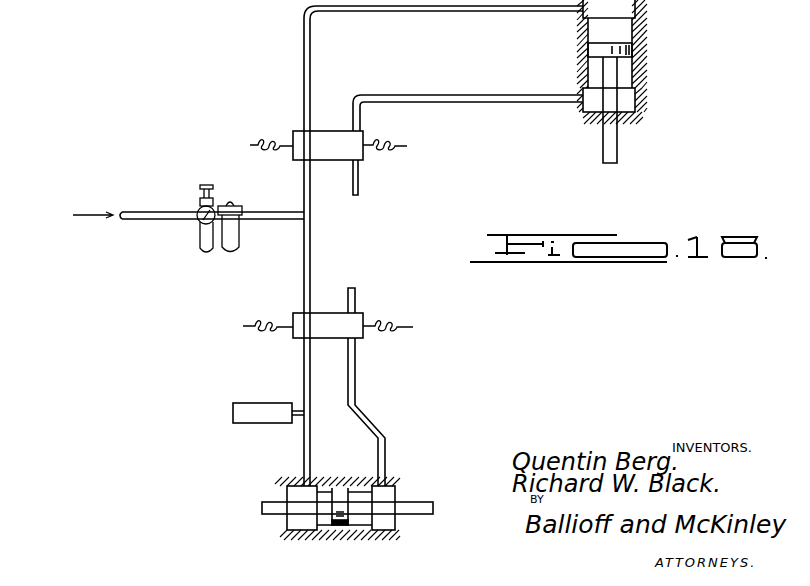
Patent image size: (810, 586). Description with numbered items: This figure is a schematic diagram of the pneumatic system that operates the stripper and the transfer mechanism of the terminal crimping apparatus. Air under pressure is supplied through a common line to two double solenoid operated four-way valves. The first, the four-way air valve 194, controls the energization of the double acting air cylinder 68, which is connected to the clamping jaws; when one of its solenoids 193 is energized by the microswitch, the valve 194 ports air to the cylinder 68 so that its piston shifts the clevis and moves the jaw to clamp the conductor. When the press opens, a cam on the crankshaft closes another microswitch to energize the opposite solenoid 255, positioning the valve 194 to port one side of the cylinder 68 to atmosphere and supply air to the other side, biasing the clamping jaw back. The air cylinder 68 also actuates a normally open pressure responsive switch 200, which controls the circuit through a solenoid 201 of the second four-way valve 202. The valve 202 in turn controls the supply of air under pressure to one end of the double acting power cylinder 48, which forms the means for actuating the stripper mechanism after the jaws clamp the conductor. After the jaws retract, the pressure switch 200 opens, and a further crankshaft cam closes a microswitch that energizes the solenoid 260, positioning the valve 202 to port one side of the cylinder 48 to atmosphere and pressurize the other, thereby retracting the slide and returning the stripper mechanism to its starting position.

The double acting air cylinder 48 is at (637, 72).
The double acting air cylinder 68 is at (332, 480).
The solenoid 193 is at (268, 323).
The double solenoid operated 4-way air valve 194 is at (325, 322).
The pressure responsive switch 200 is at (262, 423).
The solenoid 201 is at (393, 150).
The double solenoid operated 4-way valve 202 is at (330, 131).
The solenoid 255 is at (397, 322).
The solenoid 260 is at (270, 147).